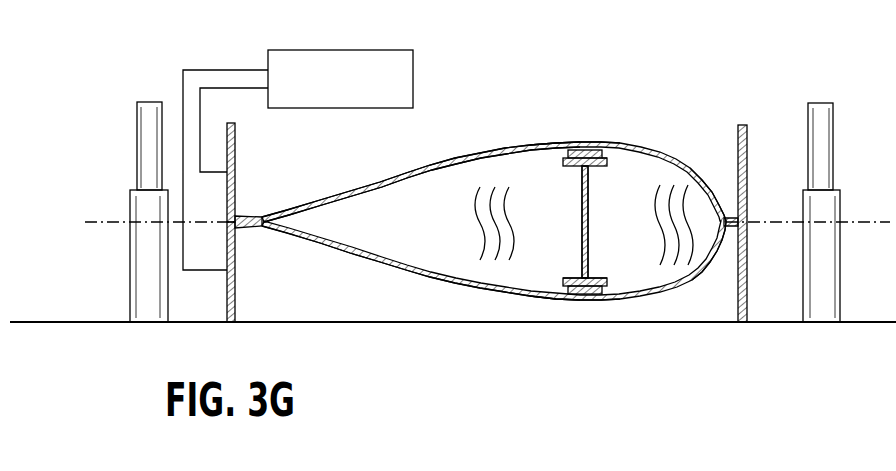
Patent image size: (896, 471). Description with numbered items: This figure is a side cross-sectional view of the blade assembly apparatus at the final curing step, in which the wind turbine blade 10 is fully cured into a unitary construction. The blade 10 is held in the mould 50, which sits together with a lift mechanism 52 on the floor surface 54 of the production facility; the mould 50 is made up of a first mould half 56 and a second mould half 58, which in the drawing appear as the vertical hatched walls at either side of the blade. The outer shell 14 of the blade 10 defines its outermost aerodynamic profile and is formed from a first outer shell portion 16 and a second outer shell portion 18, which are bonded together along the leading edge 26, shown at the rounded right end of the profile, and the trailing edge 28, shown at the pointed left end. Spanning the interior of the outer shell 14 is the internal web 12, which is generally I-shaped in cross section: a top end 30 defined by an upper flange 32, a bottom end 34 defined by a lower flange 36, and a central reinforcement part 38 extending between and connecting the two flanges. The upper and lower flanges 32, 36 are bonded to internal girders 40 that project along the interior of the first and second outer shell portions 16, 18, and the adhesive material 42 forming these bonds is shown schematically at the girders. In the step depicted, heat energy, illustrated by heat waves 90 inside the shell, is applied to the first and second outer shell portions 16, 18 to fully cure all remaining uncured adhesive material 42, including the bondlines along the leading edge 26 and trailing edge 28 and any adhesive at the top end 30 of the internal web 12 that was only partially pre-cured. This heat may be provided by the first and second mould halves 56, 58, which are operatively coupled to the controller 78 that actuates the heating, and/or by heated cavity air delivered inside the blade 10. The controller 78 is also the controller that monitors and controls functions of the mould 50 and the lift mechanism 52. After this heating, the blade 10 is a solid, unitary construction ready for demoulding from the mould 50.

The wind turbine blade 10 is at (460, 158).
The internal web 12 is at (580, 222).
The outer shell 14 is at (404, 171).
The first outer shell portion 16 is at (433, 270).
The second outer shell portion 18 is at (434, 181).
The leading edge 26 is at (722, 210).
The trailing edge 28 is at (240, 218).
The top end 30 is at (611, 167).
The upper flange 32 is at (567, 144).
The bottom end 34 is at (560, 282).
The lower flange 36 is at (574, 277).
The central reinforcement part 38 is at (590, 240).
The internal girders 40 is at (612, 158).
The adhesive material 42 is at (593, 158).
The mould 50 is at (749, 282).
The lift mechanism 52 is at (137, 133).
The floor surface 54 is at (862, 321).
The first mould half 56 is at (236, 300).
The second mould half 58 is at (236, 165).
The controller 78 is at (413, 62).
The heat waves 90 is at (510, 212).